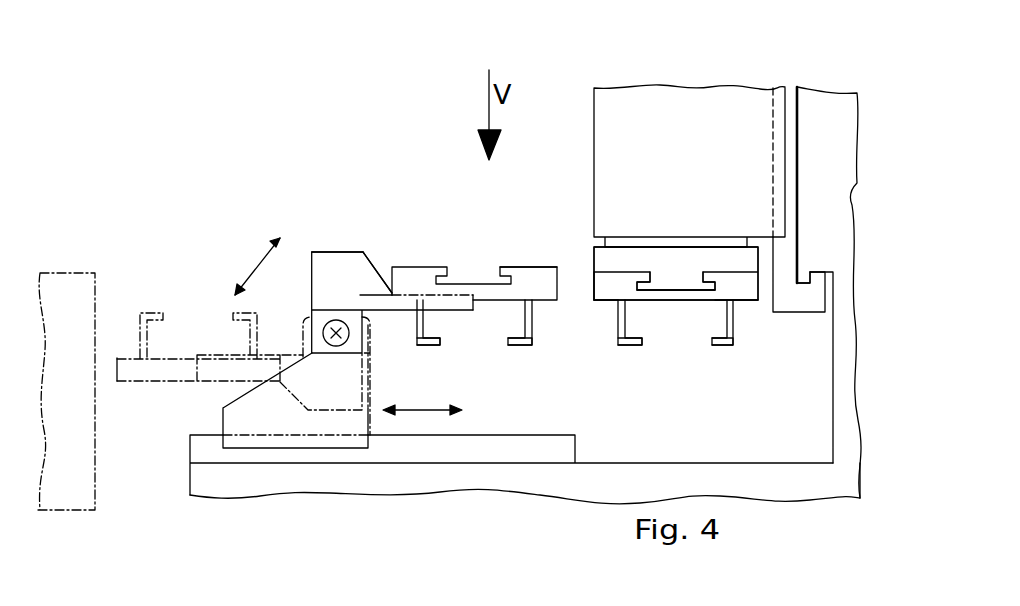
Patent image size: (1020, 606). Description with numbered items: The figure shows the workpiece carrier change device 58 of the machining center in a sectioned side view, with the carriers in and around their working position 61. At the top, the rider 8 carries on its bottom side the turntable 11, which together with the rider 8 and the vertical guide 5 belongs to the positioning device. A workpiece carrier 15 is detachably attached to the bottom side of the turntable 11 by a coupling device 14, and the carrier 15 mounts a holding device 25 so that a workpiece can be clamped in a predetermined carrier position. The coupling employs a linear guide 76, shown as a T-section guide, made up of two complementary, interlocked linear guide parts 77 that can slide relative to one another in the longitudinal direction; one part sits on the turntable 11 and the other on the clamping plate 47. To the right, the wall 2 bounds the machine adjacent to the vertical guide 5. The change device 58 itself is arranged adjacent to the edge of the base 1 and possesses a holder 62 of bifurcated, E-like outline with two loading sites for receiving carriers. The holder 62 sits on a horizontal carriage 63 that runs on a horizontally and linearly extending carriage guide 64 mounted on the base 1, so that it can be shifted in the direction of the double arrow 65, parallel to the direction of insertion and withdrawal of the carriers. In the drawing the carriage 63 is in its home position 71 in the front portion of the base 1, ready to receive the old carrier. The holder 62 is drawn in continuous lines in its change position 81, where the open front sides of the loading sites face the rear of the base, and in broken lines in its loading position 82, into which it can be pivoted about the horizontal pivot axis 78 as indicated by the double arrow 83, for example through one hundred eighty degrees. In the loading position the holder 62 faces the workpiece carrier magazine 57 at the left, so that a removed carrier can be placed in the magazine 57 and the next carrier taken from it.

The base 1 is at (588, 477).
The frame wall 2 is at (850, 337).
The vertical guide 5 is at (803, 297).
The rider 8 is at (691, 100).
The turntable 11 is at (593, 259).
The coupling device 14 is at (760, 277).
The workpiece carrier 15 is at (585, 302).
The holding device 25 is at (525, 350).
The clamping plate 47 is at (748, 292).
The workpiece carrier magazine 57 is at (66, 266).
The workpiece carrier change device 58 is at (347, 242).
The working position 61 is at (600, 302).
The holder 62 is at (371, 258).
The horizontal carriage 63 is at (270, 448).
The carriage guide 64 is at (434, 463).
The double arrow 65 is at (423, 410).
The home position 71 is at (362, 248).
The linear guide 76 is at (681, 305).
The linear guide part 77 is at (480, 266).
The pivot axis 78 is at (333, 319).
The change position 81 is at (393, 312).
The loading position 82 is at (205, 387).
The double arrow 83 is at (253, 258).